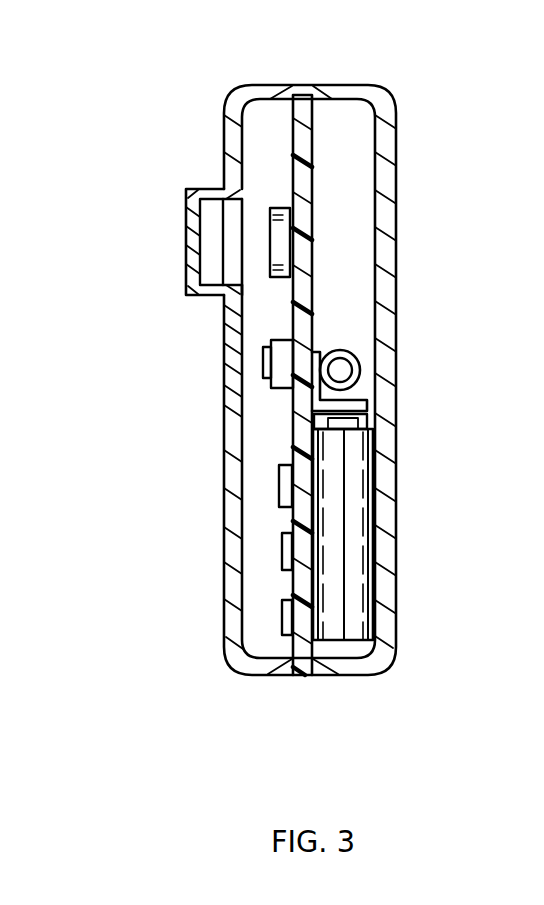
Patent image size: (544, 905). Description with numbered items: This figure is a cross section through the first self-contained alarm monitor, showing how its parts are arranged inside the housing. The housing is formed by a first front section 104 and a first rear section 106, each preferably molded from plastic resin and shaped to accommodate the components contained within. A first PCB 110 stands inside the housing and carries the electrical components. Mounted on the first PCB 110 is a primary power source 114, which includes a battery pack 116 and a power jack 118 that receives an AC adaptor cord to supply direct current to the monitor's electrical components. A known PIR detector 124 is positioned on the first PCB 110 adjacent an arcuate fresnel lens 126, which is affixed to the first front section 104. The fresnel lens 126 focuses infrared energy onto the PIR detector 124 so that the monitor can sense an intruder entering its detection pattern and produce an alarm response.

The first front section 104 is at (247, 85).
The first rear section 106 is at (396, 140).
The first PCB 110 is at (323, 115).
The primary power source 114 is at (367, 406).
The battery pack 116 is at (357, 547).
The power jack 118 is at (362, 357).
The PIR detector 124 is at (282, 208).
The arcuate fresnel lens 126 is at (186, 245).